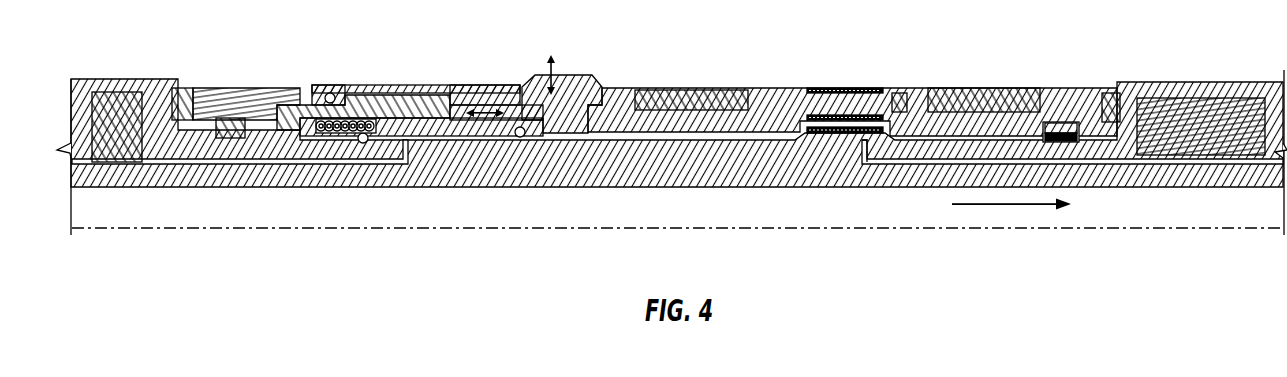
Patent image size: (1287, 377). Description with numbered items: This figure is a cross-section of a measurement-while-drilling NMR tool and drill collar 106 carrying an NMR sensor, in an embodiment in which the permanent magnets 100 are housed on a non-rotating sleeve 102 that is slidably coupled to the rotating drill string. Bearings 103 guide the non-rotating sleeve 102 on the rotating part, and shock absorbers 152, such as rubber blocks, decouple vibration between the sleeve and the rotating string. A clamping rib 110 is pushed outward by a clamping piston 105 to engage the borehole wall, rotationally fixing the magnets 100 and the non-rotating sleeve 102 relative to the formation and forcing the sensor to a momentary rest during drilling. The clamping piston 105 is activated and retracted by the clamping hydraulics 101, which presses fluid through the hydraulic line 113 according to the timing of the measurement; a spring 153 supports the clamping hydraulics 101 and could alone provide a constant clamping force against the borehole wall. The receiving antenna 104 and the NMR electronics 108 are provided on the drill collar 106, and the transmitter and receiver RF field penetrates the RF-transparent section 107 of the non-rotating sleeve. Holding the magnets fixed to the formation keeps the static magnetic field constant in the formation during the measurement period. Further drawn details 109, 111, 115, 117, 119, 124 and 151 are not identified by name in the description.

The permanent magnets 100 is at (673, 88).
The clamping hydraulics 101 is at (128, 90).
The non-rotating sleeve 102 is at (762, 89).
The bearings 103 is at (182, 87).
The receiving antenna 104 is at (850, 88).
The clamping piston 105 is at (458, 105).
The drill collar 106 is at (463, 163).
The RF-transparent section 107 is at (826, 92).
The NMR electronics 108 is at (1180, 113).
The seal 109 is at (1084, 90).
The clamping rib 110 is at (571, 86).
The flow direction arrow 111 is at (997, 206).
The hydraulic line 113 is at (258, 165).
The seal 115 is at (907, 89).
The port 117 is at (836, 130).
The threads 119 is at (833, 126).
The passage 124 is at (1060, 143).
The sensor 151 is at (1058, 126).
The shock absorbers 152 is at (1062, 145).
The spring 153 is at (345, 119).